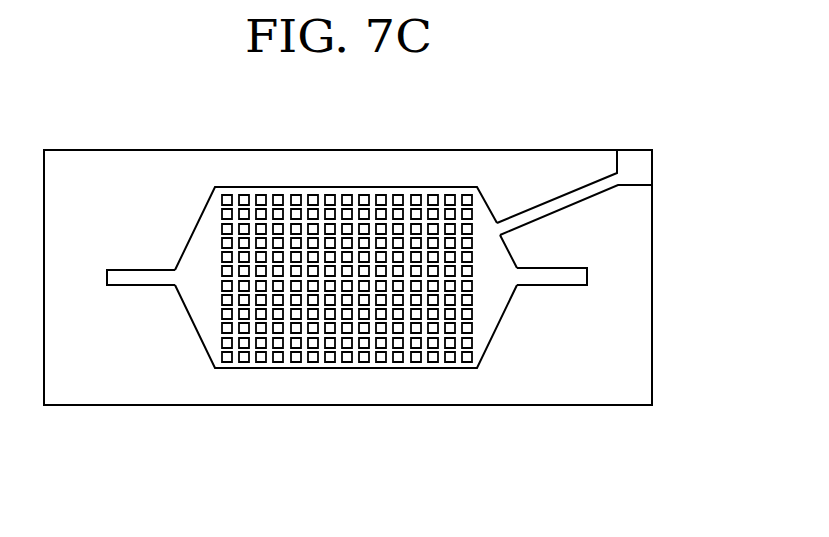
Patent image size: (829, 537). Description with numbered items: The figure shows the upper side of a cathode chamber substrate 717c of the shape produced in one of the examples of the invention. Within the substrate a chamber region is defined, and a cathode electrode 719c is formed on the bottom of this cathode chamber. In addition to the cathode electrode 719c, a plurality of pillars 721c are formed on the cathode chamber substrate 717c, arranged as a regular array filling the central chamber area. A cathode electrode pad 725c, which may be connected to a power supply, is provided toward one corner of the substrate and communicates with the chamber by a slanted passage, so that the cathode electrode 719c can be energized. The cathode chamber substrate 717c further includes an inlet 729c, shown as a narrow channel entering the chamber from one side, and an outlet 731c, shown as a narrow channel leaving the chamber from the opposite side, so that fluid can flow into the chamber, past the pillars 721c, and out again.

The cathode chamber substrate 717c is at (638, 363).
The cathode electrode 719c is at (202, 290).
The pillars 721c is at (330, 200).
The cathode electrode pad 725c is at (640, 170).
The inlet 729c is at (128, 278).
The outlet 731c is at (588, 277).